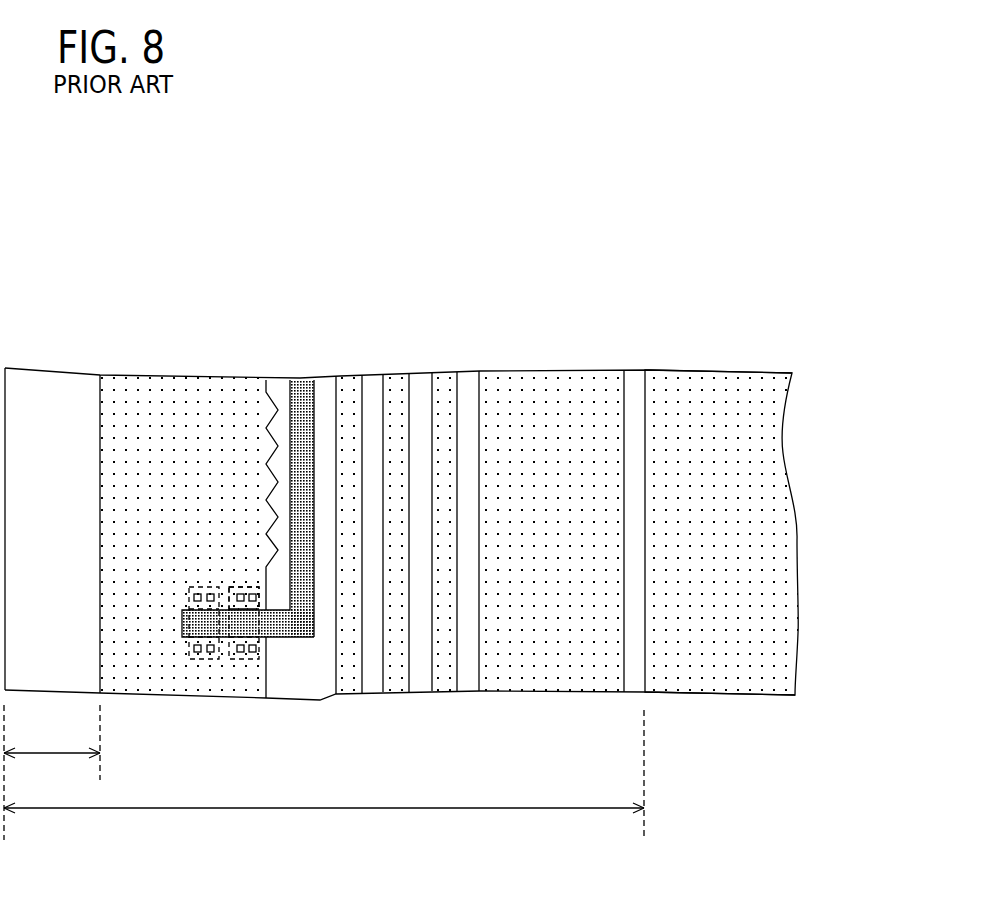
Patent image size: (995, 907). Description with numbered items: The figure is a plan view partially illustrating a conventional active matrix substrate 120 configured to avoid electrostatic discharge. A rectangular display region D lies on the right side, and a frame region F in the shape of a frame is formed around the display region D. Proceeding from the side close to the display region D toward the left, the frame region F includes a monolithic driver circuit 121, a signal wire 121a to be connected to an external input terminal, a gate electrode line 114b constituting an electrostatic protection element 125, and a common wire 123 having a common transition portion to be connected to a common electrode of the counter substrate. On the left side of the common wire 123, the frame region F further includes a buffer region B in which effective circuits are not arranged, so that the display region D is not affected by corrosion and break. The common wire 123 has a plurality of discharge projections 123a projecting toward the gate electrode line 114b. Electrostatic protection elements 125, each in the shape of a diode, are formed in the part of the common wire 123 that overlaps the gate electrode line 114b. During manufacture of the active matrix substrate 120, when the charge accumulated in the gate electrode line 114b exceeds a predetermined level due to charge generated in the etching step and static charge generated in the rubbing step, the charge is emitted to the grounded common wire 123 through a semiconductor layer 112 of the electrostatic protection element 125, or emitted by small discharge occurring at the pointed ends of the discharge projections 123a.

The active matrix substrate 120 is at (71, 286).
The common wire 123 is at (167, 398).
The discharge projections 123a is at (272, 398).
The gate electrode line 114b is at (302, 398).
The signal wire 121a is at (456, 361).
The monolithic driver circuit 121 is at (558, 398).
The semiconductor layer 112 is at (243, 587).
The electrostatic protection element 125 is at (178, 586).
The display region D is at (708, 400).
The buffer region B is at (52, 772).
The frame region F is at (324, 775).